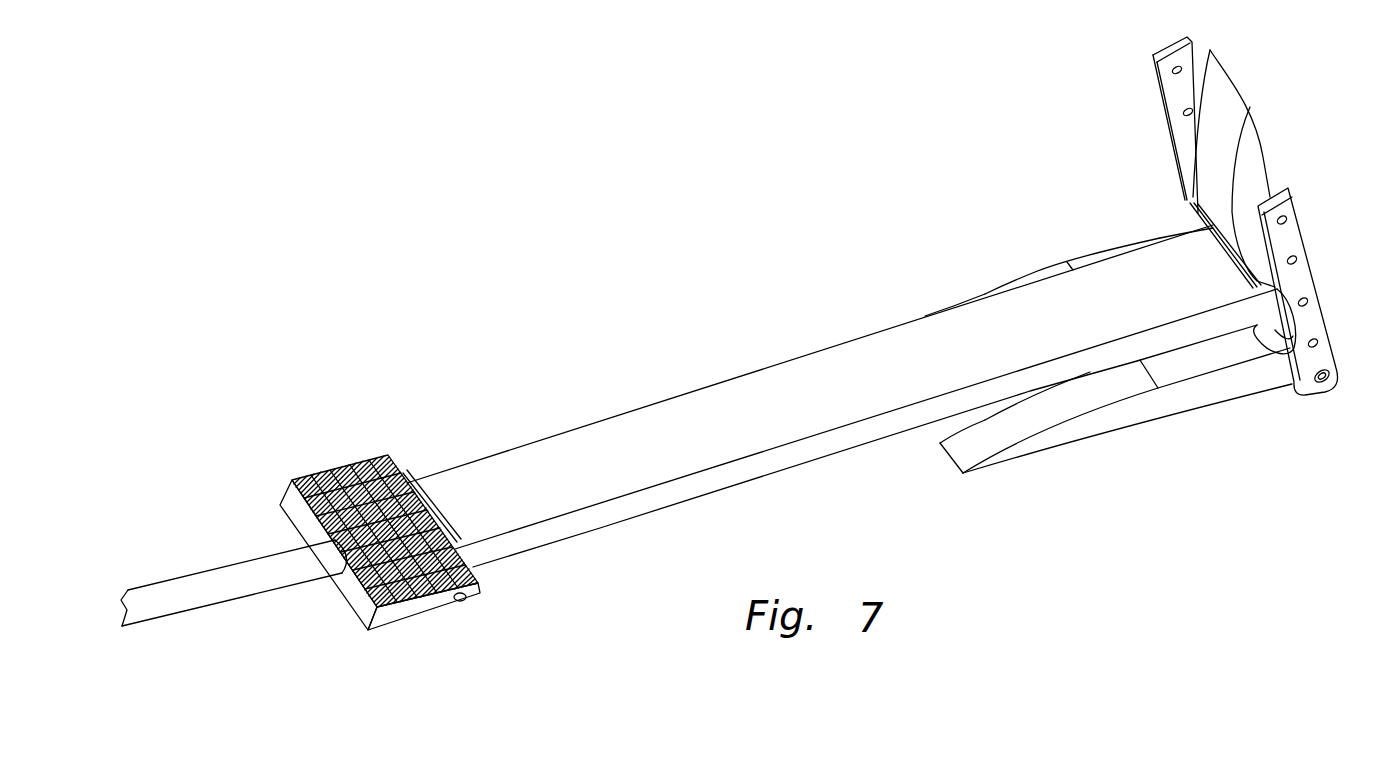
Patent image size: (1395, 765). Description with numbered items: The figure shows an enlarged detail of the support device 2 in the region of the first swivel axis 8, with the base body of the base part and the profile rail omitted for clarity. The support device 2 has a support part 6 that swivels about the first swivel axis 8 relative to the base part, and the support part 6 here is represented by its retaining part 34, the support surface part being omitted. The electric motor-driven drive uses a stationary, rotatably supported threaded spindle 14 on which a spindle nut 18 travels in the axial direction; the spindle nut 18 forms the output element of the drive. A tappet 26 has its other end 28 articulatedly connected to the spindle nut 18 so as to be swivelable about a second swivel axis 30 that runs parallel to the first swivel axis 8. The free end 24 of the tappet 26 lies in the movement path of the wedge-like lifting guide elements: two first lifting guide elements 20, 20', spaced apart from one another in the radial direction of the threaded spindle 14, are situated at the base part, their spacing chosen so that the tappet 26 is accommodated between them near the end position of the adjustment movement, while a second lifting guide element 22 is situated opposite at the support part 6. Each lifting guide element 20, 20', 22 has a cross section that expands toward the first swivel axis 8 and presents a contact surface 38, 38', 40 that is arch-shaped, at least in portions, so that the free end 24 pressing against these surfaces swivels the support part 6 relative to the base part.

The support device 2 is at (772, 165).
The support part 6 is at (1303, 182).
The first swivel axis 8 is at (1323, 382).
The threaded spindle 14 is at (210, 590).
The spindle nut 18 is at (330, 470).
The first wedge-like lifting guide element 20 is at (1116, 442).
The first wedge-like lifting guide element 20' is at (1033, 261).
The second wedge-like lifting guide element 22 is at (1213, 152).
The free end of the tappet 24 is at (1210, 263).
The tappet 26 is at (565, 447).
The other end of the tappet 28 is at (450, 485).
The second swivel axis 30 is at (467, 602).
The retaining part 34 is at (1303, 280).
The contact surface 38 is at (991, 478).
The contact surface 38' is at (946, 263).
The contact surface 40 is at (1217, 97).